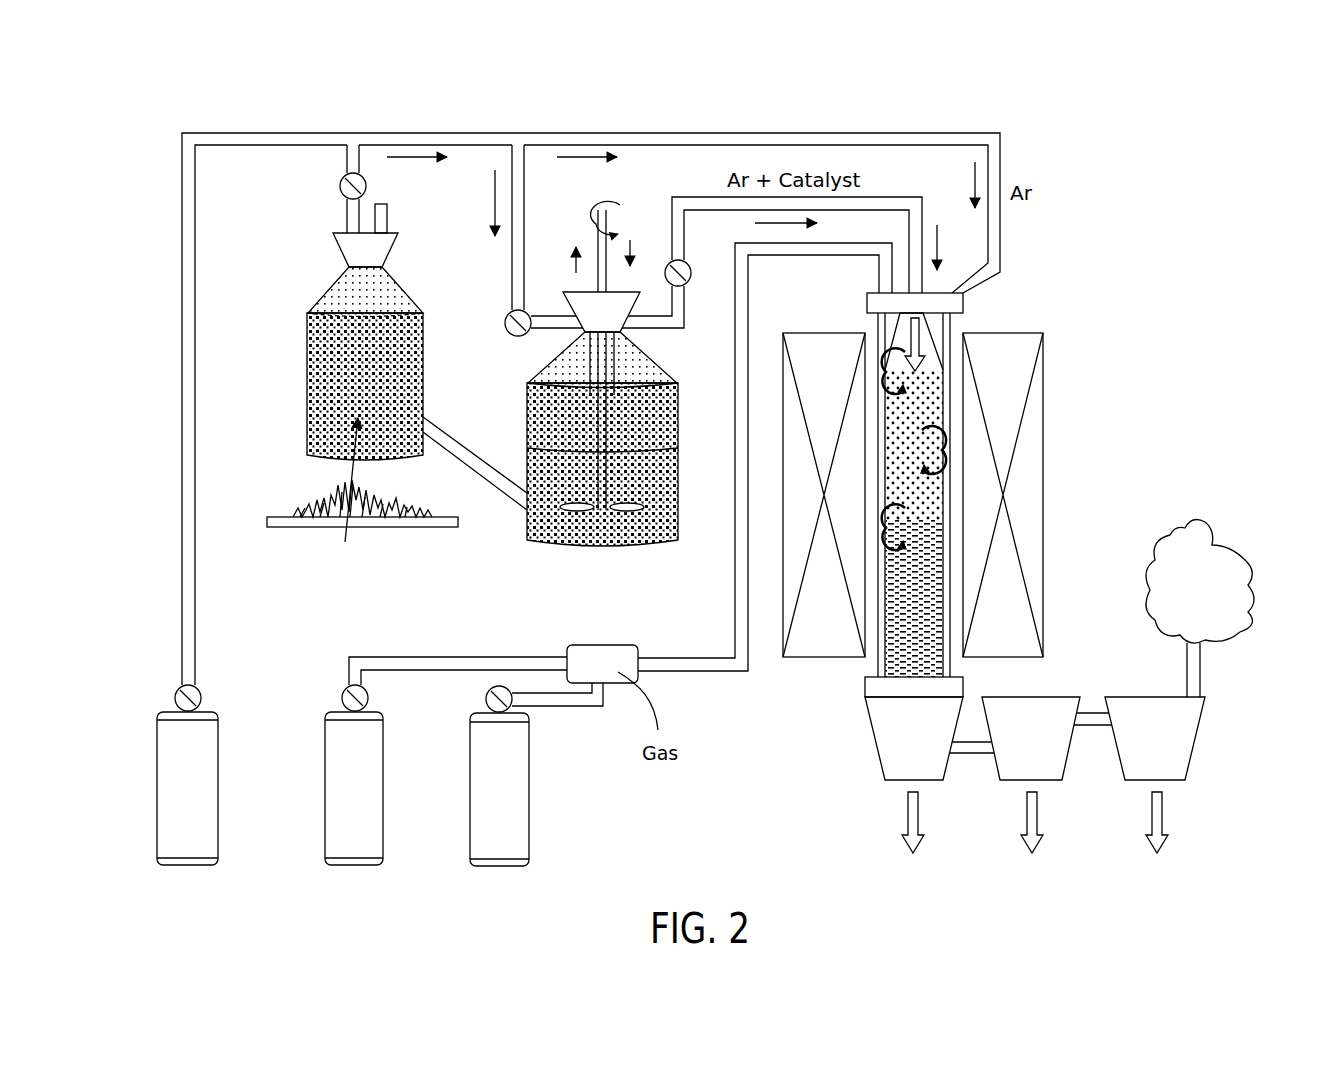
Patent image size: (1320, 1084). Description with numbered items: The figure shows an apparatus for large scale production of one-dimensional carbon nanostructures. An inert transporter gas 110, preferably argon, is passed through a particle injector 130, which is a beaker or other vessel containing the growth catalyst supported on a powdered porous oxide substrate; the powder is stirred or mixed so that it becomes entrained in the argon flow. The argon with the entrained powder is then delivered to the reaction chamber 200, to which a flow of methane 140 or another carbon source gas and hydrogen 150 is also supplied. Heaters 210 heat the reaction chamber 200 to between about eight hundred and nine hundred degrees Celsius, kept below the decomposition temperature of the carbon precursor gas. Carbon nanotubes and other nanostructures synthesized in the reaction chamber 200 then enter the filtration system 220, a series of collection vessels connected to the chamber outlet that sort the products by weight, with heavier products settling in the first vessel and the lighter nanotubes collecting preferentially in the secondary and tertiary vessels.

The inert transporter gas 110 is at (209, 775).
The particle injector 130 is at (615, 487).
The methane 140 is at (446, 761).
The hydrogen 150 is at (536, 774).
The reaction chamber 200 is at (1024, 318).
The heaters 210 is at (1043, 395).
The filtration system 220 is at (1037, 728).